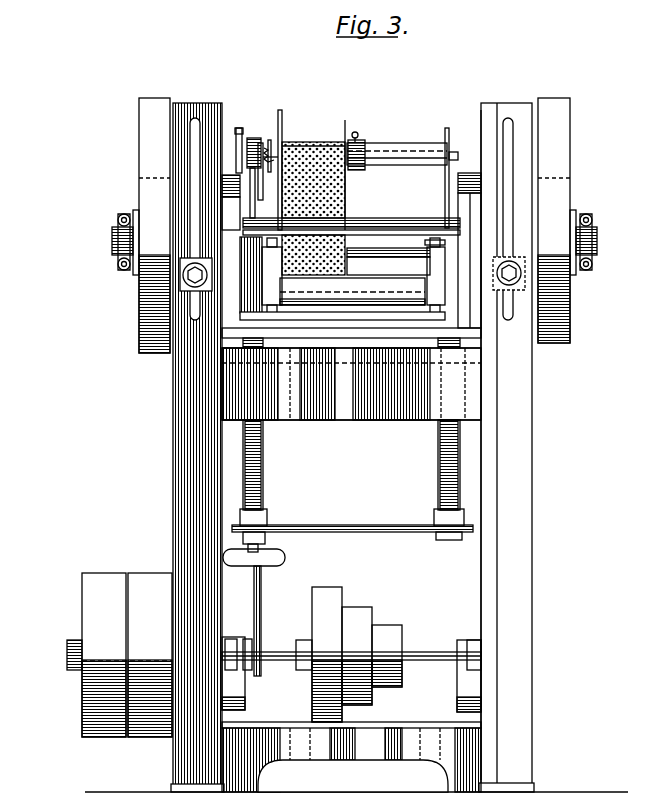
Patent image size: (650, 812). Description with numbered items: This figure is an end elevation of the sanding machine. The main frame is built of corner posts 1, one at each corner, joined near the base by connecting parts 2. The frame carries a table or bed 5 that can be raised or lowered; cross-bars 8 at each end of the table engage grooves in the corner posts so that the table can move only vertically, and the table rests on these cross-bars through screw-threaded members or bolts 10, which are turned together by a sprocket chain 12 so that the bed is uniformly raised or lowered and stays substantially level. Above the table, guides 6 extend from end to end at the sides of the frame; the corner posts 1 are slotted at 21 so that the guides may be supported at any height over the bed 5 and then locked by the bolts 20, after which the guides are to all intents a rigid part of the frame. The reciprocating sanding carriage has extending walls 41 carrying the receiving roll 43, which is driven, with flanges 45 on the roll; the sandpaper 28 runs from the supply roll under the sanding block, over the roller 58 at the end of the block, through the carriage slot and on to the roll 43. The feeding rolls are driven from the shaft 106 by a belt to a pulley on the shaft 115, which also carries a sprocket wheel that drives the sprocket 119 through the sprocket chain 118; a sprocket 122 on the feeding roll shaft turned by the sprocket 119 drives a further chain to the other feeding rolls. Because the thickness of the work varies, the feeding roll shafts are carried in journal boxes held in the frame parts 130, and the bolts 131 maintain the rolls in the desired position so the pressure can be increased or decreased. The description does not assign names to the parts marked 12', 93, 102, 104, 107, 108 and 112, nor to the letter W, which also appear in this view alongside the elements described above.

The posts 1 is at (524, 420).
The connecting parts 2 is at (320, 756).
The table or bed 5 is at (312, 320).
The guides 6 is at (512, 290).
The cross-bars 8 is at (388, 333).
The screw-threaded members or bolts 10 is at (264, 496).
The sprocket chain 12 is at (352, 517).
The handle 12' is at (294, 555).
The bolts 20 is at (188, 278).
The slots 21 is at (192, 140).
The sandpaper 28 is at (330, 213).
The extending walls 41 is at (255, 138).
The receiving roll 43 is at (380, 148).
The flanges 45 is at (282, 126).
The roller 58 is at (384, 259).
The rod 93 is at (240, 128).
The pulley 102 is at (152, 98).
The column 104 is at (236, 441).
The shaft 106 is at (173, 653).
The pulley 107 is at (135, 573).
The bearing 108 is at (245, 703).
The roller 112 is at (388, 282).
The shaft 115 is at (430, 651).
The sprocket chain 118 is at (262, 600).
The sprocket 119 is at (388, 630).
The sprocket 122 is at (243, 308).
The frame parts 130 is at (436, 262).
The bolts 131 is at (433, 240).
The web W is at (300, 313).